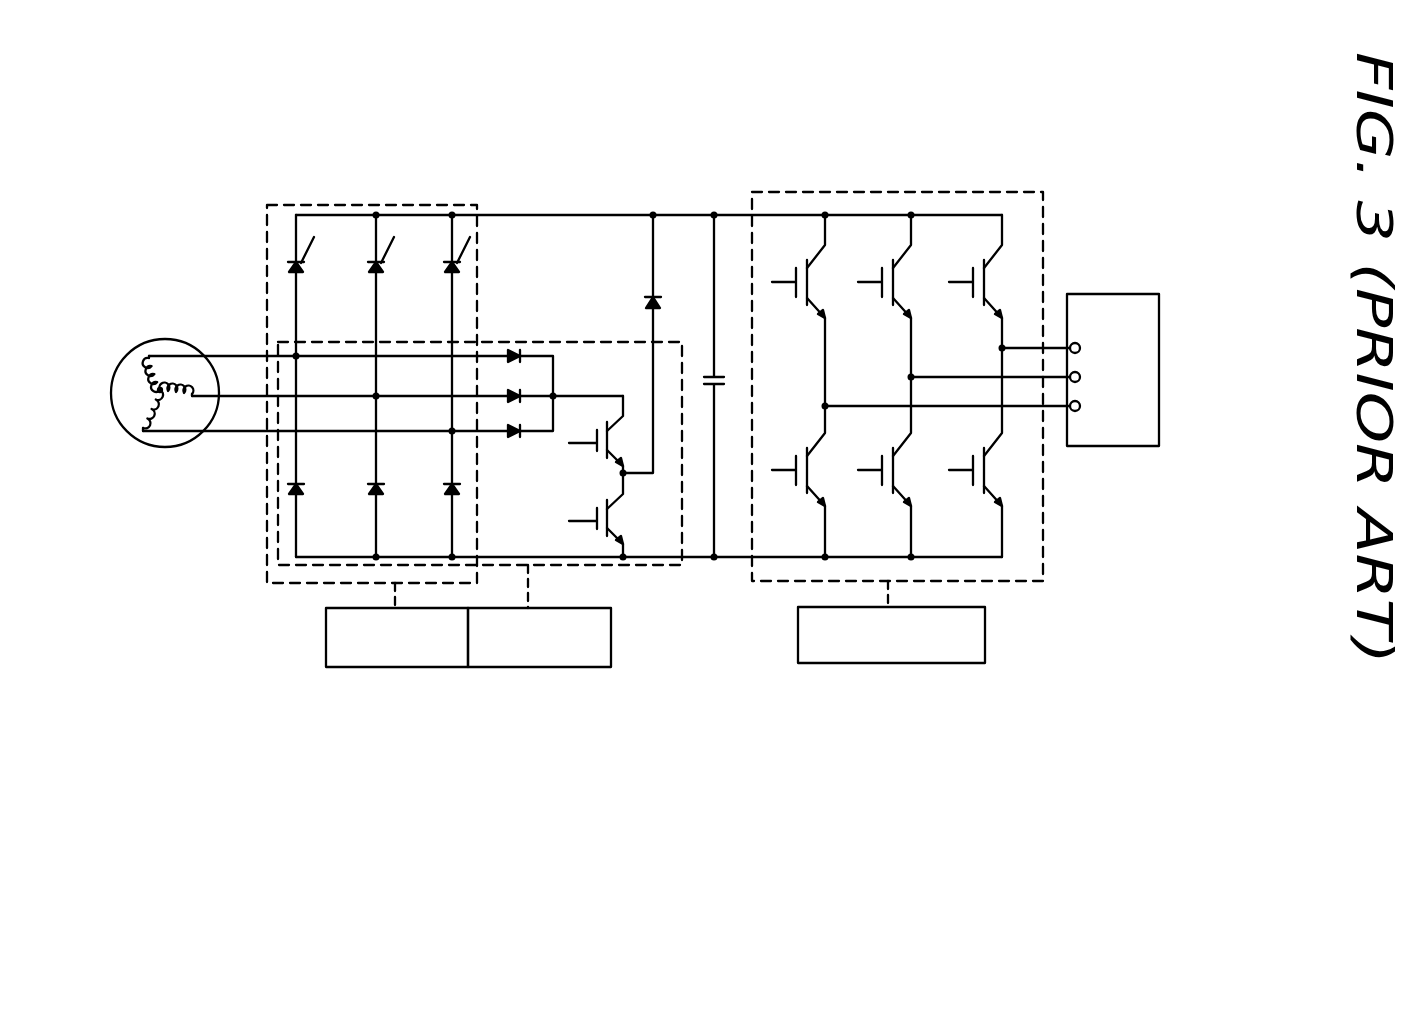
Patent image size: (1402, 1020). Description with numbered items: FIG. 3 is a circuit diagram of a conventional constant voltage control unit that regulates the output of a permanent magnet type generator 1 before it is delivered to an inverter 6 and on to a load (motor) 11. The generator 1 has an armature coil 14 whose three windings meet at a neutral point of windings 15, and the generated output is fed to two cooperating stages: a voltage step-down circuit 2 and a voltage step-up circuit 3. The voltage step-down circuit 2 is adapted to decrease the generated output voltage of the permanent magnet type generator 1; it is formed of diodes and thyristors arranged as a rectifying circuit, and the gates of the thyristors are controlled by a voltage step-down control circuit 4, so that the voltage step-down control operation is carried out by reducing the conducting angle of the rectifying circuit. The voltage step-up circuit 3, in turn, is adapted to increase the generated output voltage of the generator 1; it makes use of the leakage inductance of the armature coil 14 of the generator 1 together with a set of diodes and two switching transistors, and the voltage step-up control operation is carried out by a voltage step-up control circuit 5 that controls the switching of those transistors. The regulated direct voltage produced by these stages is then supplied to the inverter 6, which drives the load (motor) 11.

The permanent magnet type generator 1 is at (137, 358).
The voltage step-down circuit 2 is at (287, 203).
The voltage step-up circuit 3 is at (653, 565).
The voltage step-down control circuit 4 is at (392, 653).
The voltage step-up control circuit 5 is at (526, 647).
The inverter 6 is at (1013, 188).
The load (motor) 11 is at (1135, 307).
The armature coil 14 is at (140, 417).
The neutral point of windings 15 is at (157, 393).